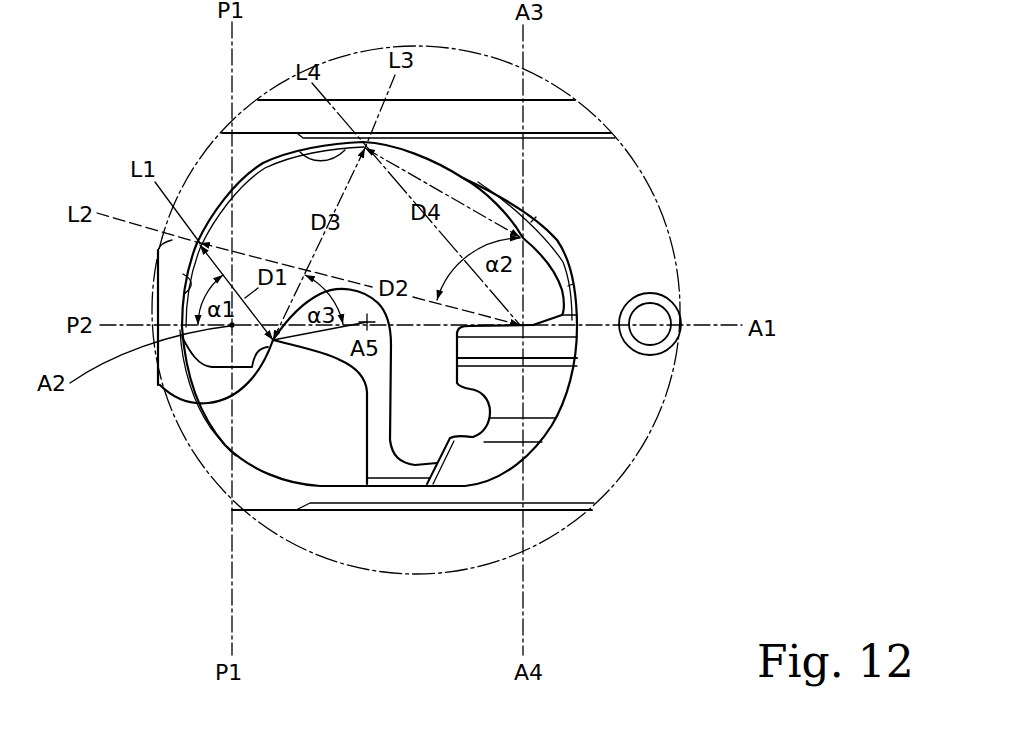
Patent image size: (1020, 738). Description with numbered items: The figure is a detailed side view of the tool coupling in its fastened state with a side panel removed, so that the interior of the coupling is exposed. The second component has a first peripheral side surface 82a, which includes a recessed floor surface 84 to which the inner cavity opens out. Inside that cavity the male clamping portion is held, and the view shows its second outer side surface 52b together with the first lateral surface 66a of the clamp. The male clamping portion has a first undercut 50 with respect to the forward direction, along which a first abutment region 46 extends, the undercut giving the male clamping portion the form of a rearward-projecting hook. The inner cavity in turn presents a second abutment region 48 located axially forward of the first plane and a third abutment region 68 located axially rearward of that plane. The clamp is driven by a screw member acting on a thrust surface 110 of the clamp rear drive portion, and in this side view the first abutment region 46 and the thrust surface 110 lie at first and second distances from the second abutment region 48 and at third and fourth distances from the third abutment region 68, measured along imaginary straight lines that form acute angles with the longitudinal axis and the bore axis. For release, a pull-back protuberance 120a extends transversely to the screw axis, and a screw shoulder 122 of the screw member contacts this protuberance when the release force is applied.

The first lateral surface 66a is at (407, 258).
The recessed floor surface 84 is at (591, 201).
The third abutment region 68 is at (300, 152).
The second abutment region 48 is at (181, 292).
The first undercut 50 is at (160, 386).
The first abutment region 46 is at (257, 352).
The second outer side surface 52b is at (333, 414).
The pull-back protuberance 120a is at (462, 414).
The screw shoulder 122 is at (493, 347).
The thrust surface 110 is at (528, 328).
The first peripheral side surface 82a is at (420, 555).